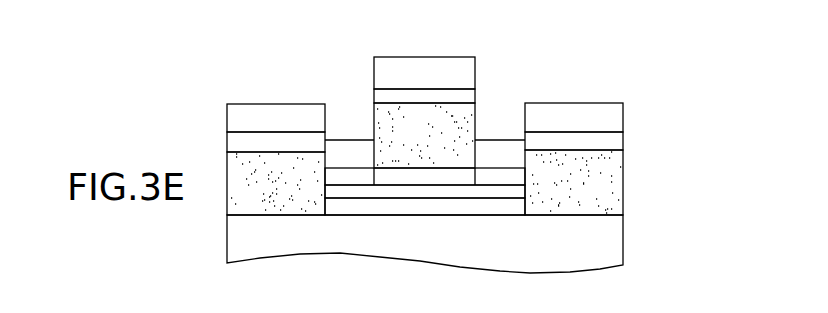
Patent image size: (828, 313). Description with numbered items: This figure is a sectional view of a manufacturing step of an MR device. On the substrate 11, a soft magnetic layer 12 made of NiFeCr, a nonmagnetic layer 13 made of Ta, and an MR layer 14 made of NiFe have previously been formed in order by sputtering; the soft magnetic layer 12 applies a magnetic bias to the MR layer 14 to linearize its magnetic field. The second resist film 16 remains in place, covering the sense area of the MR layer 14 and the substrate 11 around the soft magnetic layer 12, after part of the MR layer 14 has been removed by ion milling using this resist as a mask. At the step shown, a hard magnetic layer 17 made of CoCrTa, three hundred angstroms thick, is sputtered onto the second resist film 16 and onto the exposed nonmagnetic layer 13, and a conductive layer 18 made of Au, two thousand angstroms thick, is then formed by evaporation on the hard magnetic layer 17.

The substrate 11 is at (603, 255).
The soft magnetic layer 12 is at (465, 200).
The nonmagnetic layer 13 is at (425, 188).
The MR layer 14 is at (400, 172).
The second resist film 16 is at (610, 187).
The hard magnetic layer 17 is at (230, 143).
The conductive layer 18 is at (266, 111).